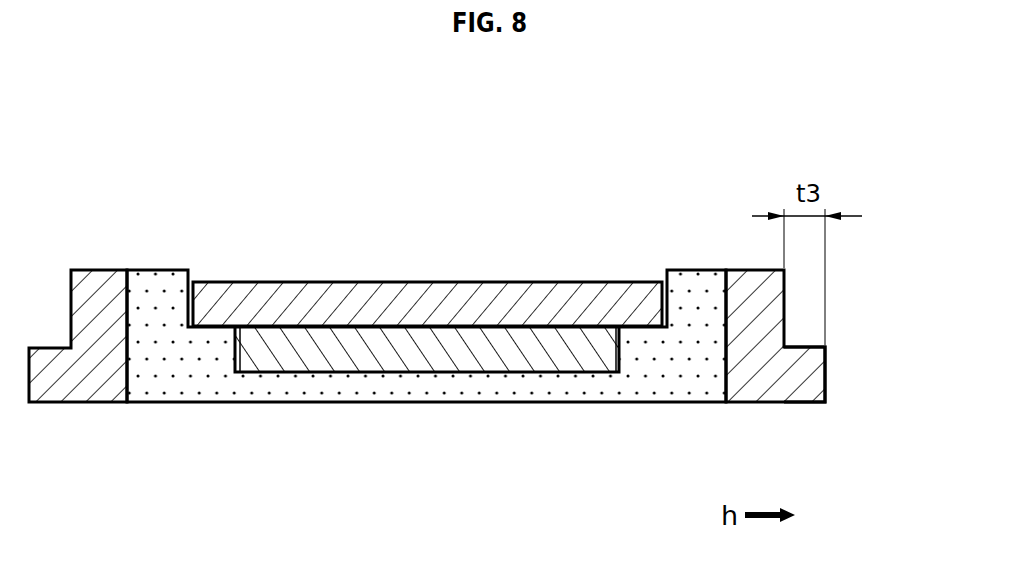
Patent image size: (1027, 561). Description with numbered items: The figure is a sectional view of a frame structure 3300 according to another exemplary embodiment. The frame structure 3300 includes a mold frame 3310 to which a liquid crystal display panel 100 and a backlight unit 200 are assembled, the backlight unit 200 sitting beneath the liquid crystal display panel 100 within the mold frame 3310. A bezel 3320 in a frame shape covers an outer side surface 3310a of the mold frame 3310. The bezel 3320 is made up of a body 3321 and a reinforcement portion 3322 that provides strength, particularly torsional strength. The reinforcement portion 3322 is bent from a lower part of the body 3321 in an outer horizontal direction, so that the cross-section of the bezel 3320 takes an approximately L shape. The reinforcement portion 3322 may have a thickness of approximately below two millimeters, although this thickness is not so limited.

The frame structure 3300 is at (485, 278).
The mold frame 3310 is at (688, 277).
The outer side surface 3310a is at (126, 311).
The bezel 3320 is at (803, 341).
The body 3321 is at (746, 388).
The reinforcement portion 3322 is at (818, 373).
The liquid crystal display panel 100 is at (458, 302).
The backlight unit 200 is at (428, 373).